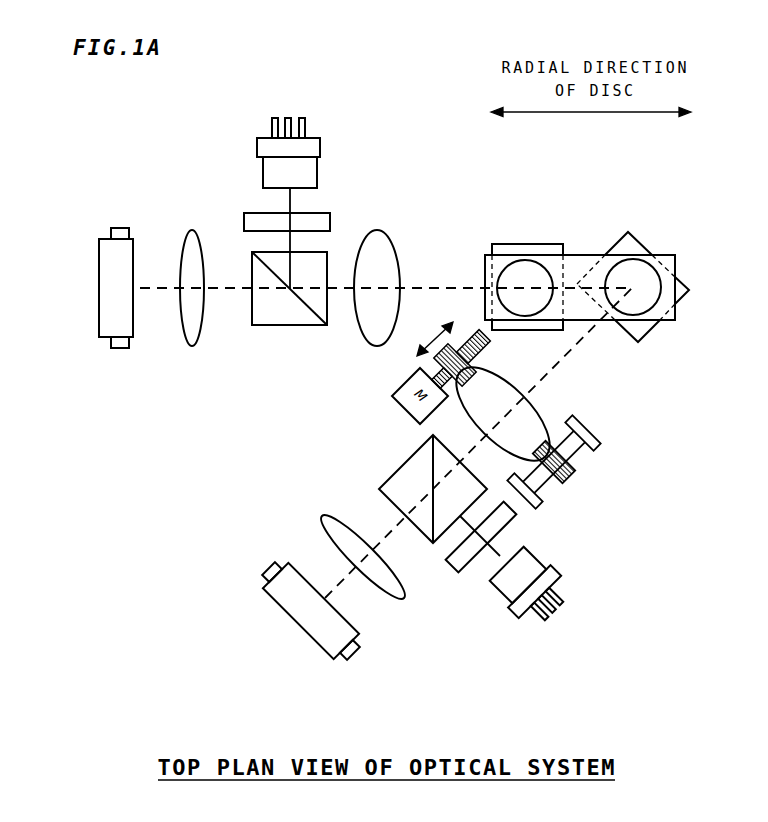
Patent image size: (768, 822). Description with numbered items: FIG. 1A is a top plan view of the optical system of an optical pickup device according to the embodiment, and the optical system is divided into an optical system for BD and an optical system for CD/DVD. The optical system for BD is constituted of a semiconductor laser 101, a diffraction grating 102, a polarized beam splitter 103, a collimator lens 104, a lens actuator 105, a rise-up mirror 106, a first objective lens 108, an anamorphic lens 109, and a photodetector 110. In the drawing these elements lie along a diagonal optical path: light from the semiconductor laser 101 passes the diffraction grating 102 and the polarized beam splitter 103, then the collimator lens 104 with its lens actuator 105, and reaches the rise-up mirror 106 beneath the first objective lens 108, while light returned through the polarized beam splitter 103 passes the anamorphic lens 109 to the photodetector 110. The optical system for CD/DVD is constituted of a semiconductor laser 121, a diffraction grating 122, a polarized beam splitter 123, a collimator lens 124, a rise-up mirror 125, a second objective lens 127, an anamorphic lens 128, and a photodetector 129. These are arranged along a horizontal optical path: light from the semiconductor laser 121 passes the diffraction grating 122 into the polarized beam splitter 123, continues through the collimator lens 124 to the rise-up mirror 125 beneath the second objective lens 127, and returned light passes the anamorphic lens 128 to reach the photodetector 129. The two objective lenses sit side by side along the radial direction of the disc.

The semiconductor laser 101 is at (553, 627).
The diffraction grating 102 is at (475, 565).
The polarized beam splitter 103 is at (410, 487).
The collimator lens 104 is at (540, 437).
The lens actuator 105 is at (562, 483).
The rise-up mirror 106 is at (638, 238).
The first objective lens 108 is at (638, 307).
The anamorphic lens 109 is at (332, 513).
The photodetector 110 is at (265, 562).
The semiconductor laser 121 is at (306, 110).
The diffraction grating 122 is at (257, 212).
The polarized beam splitter 123 is at (272, 318).
The collimator lens 124 is at (385, 253).
The rise-up mirror 125 is at (543, 252).
The second objective lens 127 is at (522, 278).
The anamorphic lens 128 is at (193, 228).
The photodetector 129 is at (108, 350).